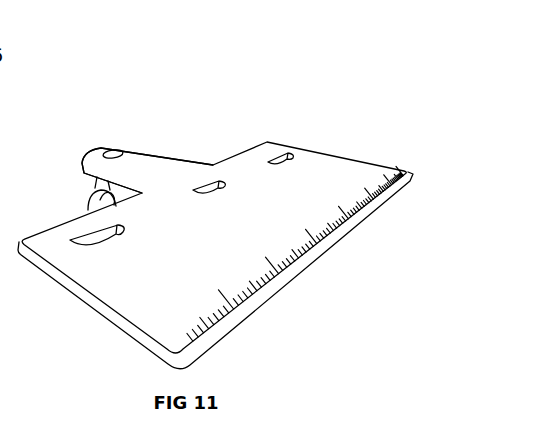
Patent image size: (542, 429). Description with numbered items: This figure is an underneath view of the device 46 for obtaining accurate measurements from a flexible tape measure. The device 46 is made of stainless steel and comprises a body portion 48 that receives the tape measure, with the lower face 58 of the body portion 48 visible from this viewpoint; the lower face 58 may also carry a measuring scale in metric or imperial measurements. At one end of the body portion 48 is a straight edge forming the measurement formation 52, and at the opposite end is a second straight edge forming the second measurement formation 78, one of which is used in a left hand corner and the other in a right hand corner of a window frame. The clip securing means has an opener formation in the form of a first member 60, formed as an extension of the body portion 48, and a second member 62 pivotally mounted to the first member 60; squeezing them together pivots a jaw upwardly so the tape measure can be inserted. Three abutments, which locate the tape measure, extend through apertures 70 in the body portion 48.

The device 46 is at (351, 97).
The body portion 48 is at (343, 168).
The measurement formation 52 is at (398, 165).
The lower face 58 is at (197, 266).
The first member 60 is at (133, 157).
The second member 62 is at (87, 205).
The apertures 70 is at (108, 234).
The second measurement formation 78 is at (147, 342).